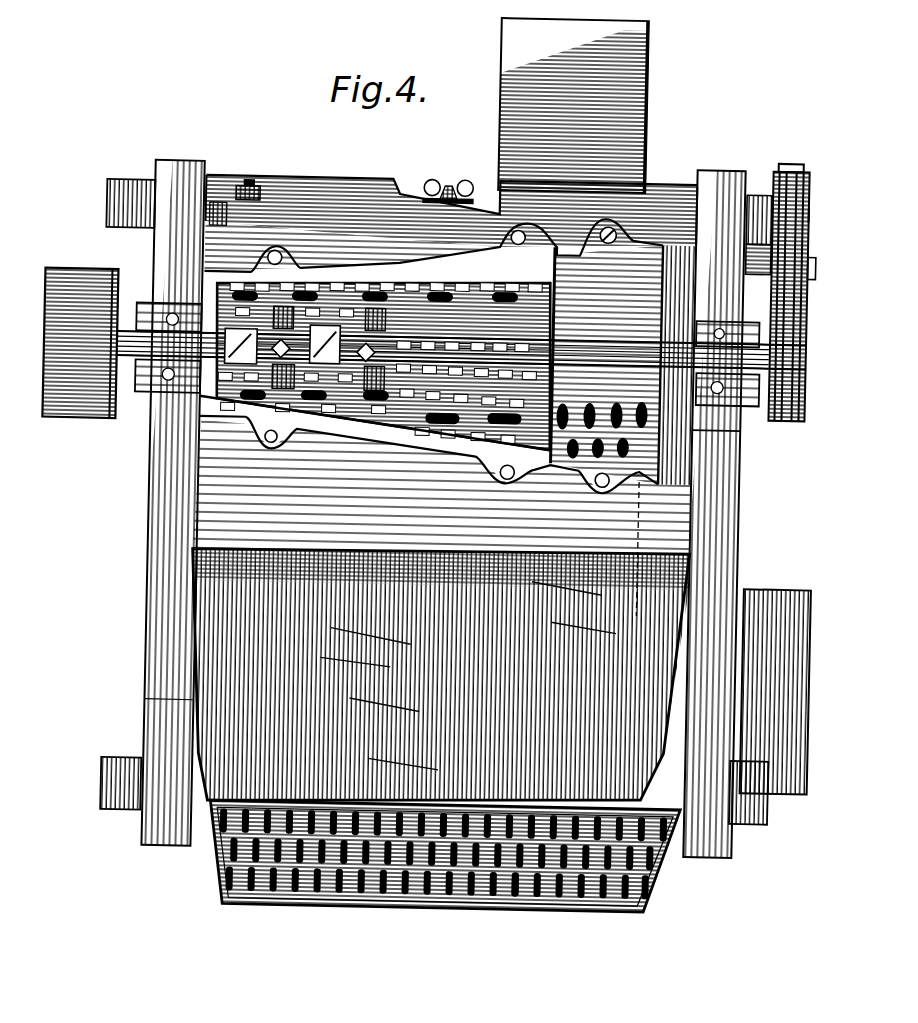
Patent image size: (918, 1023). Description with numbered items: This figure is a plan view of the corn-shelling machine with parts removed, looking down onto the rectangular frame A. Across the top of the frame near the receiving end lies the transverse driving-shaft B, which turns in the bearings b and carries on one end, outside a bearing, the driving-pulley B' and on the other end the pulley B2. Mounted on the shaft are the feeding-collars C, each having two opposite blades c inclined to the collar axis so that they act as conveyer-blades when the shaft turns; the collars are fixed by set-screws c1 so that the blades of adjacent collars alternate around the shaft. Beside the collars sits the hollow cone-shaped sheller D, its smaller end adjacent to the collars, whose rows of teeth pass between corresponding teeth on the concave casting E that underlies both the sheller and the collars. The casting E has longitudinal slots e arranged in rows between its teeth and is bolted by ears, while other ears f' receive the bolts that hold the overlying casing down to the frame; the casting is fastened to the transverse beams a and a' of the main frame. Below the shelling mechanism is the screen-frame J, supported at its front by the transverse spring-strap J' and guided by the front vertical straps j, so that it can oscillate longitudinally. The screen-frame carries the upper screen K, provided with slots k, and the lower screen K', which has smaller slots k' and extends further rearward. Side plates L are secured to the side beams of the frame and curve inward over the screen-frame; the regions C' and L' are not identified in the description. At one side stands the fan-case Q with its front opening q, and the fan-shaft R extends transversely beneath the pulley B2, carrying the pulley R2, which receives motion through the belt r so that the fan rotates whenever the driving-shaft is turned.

The frame A is at (746, 494).
The driving-shaft B is at (439, 383).
The driving-pulley B' is at (80, 326).
The pulley B2 is at (810, 396).
The bearings b is at (140, 316).
The feeding-collars C is at (383, 352).
The lower body C' is at (438, 677).
The conveyer-blades c is at (415, 265).
The set-screws c1 is at (355, 285).
The sheller D is at (466, 380).
The casting E is at (478, 446).
The longitudinal slots e is at (462, 267).
The ears f' is at (397, 369).
The screen-frame J is at (451, 186).
The spring-strap J' is at (451, 196).
The front vertical metal straps j is at (246, 190).
The upper screen K is at (602, 416).
The lower screen K' is at (443, 875).
The slots k is at (627, 493).
The slots k' is at (507, 908).
The side plates L is at (454, 578).
The inner box L' is at (621, 430).
The fan-case Q is at (586, 106).
The front opening q is at (573, 110).
The fan-shaft R is at (775, 292).
The pulley R2 is at (809, 207).
The belt r is at (814, 273).
The front transverse beam a is at (432, 345).
The transverse beam a' is at (444, 437).